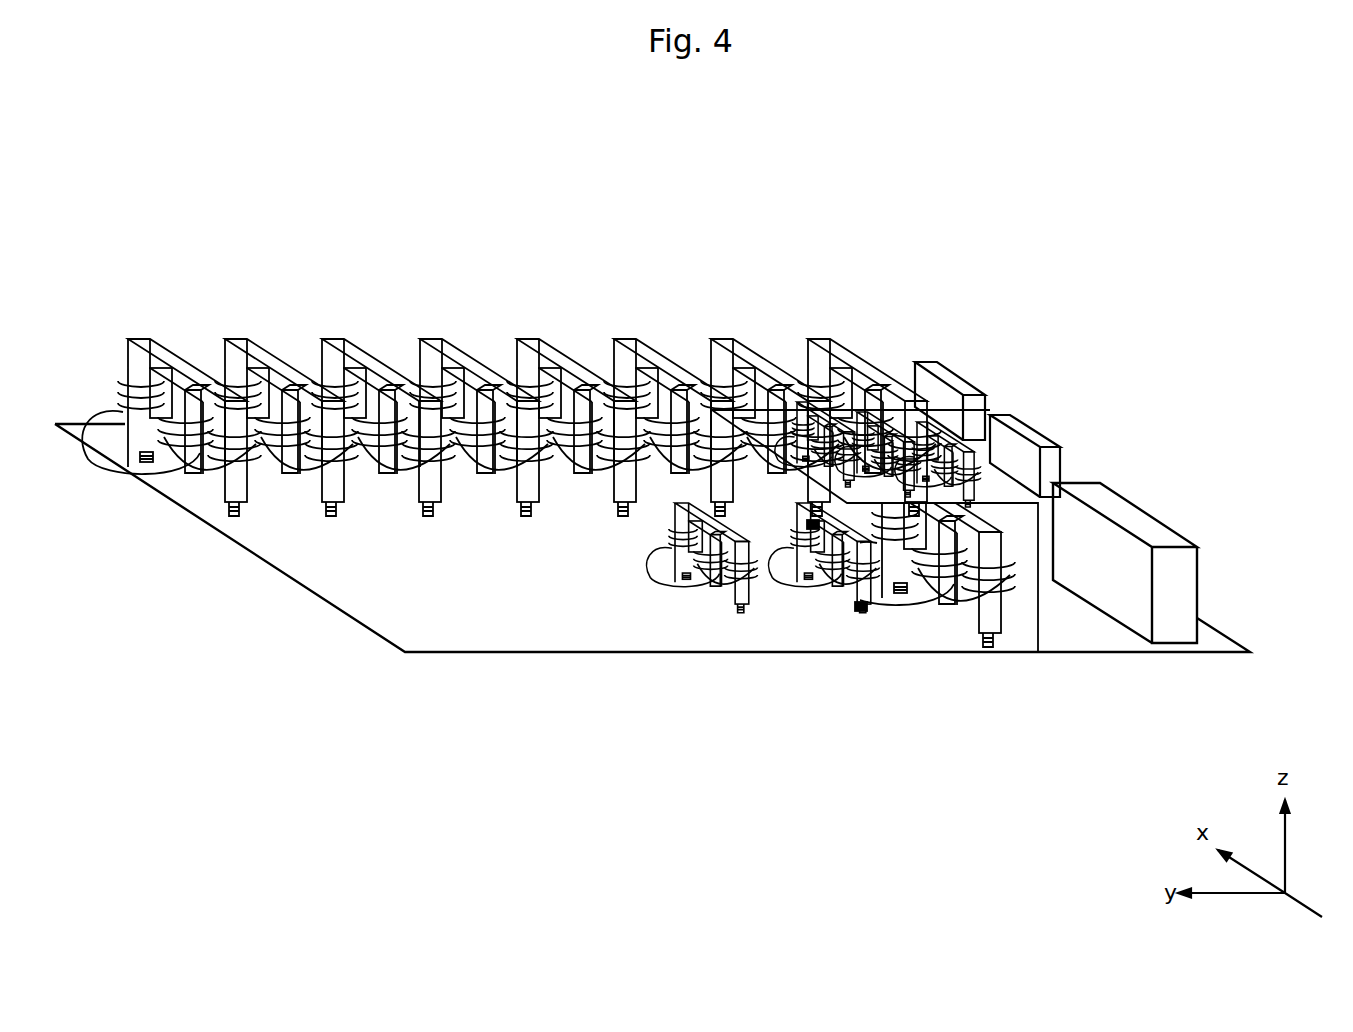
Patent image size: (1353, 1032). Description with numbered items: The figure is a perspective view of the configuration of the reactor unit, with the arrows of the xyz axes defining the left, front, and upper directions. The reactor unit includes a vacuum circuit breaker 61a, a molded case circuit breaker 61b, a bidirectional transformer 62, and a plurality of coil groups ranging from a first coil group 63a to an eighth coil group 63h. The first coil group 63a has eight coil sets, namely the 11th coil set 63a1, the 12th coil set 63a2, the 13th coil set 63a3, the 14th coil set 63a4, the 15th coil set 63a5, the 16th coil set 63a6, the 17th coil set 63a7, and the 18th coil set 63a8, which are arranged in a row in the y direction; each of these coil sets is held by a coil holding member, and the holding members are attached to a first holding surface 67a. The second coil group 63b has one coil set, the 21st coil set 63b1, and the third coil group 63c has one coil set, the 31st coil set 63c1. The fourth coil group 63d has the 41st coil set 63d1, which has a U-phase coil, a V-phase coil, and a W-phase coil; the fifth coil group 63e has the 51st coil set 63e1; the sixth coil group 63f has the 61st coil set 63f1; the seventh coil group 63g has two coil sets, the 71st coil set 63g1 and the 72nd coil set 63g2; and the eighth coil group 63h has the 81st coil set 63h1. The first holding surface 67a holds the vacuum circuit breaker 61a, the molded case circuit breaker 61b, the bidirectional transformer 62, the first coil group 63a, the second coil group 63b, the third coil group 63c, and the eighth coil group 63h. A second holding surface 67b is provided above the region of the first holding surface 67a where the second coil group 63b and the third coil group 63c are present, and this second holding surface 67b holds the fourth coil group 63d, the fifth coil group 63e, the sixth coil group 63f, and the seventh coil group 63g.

The first coil group 63a is at (850, 252).
The 11th coil set 63a1 is at (138, 338).
The 12th coil set 63a2 is at (236, 338).
The 13th coil set 63a3 is at (332, 338).
The 14th coil set 63a4 is at (430, 338).
The 15th coil set 63a5 is at (527, 338).
The 16th coil set 63a6 is at (648, 313).
The 17th coil set 63a7 is at (721, 338).
The 18th coil set 63a8 is at (818, 338).
The vacuum circuit breaker 61a is at (937, 360).
The molded case circuit breaker 61b is at (1038, 440).
The bidirectional transformer 62 is at (1188, 562).
The second coil group 63b is at (997, 603).
The 21st coil set 63b1 is at (948, 615).
The third coil group 63c is at (668, 620).
The 31st coil set 63c1 is at (808, 595).
The fourth coil group 63d is at (1079, 397).
The 41st coil set 63d1 is at (972, 418).
The fifth coil group 63e is at (1081, 447).
The 51st coil set 63e1 is at (878, 454).
The sixth coil group 63f is at (1057, 469).
The 61st coil set 63f1 is at (818, 444).
The eighth coil group 63h is at (624, 567).
The 81st coil set 63h1 is at (720, 597).
The seventh coil group 63g is at (910, 713).
The 71st coil set 63g1 is at (819, 530).
The 72nd coil set 63g2 is at (861, 612).
The first holding surface 67a is at (1207, 643).
The second holding surface 67b is at (745, 422).